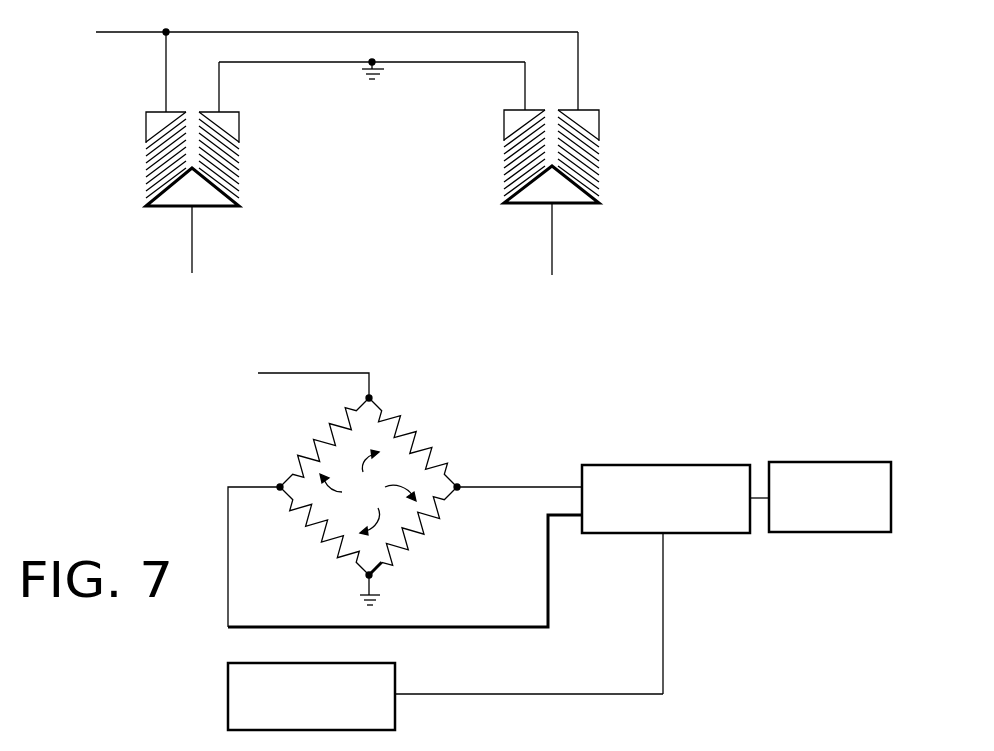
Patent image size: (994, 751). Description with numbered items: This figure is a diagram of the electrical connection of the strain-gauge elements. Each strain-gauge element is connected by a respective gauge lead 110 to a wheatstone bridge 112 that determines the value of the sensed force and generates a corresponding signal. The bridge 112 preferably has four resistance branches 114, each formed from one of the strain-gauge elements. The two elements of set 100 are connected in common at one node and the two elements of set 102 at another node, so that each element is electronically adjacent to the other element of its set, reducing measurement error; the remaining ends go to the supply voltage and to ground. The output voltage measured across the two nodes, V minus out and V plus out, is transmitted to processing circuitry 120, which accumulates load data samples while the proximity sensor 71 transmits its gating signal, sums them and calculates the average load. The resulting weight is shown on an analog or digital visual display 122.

The proximity sensor 71 is at (228, 684).
The set of strain-gauge elements 100 is at (195, 211).
The set of strain-gauge elements 102 is at (554, 209).
The gauge lead 110 is at (612, 52).
The wheatstone bridge 112 is at (395, 485).
The resistance branch 114 is at (368, 492).
The processing circuitry 120 is at (613, 464).
The visual display 122 is at (785, 461).